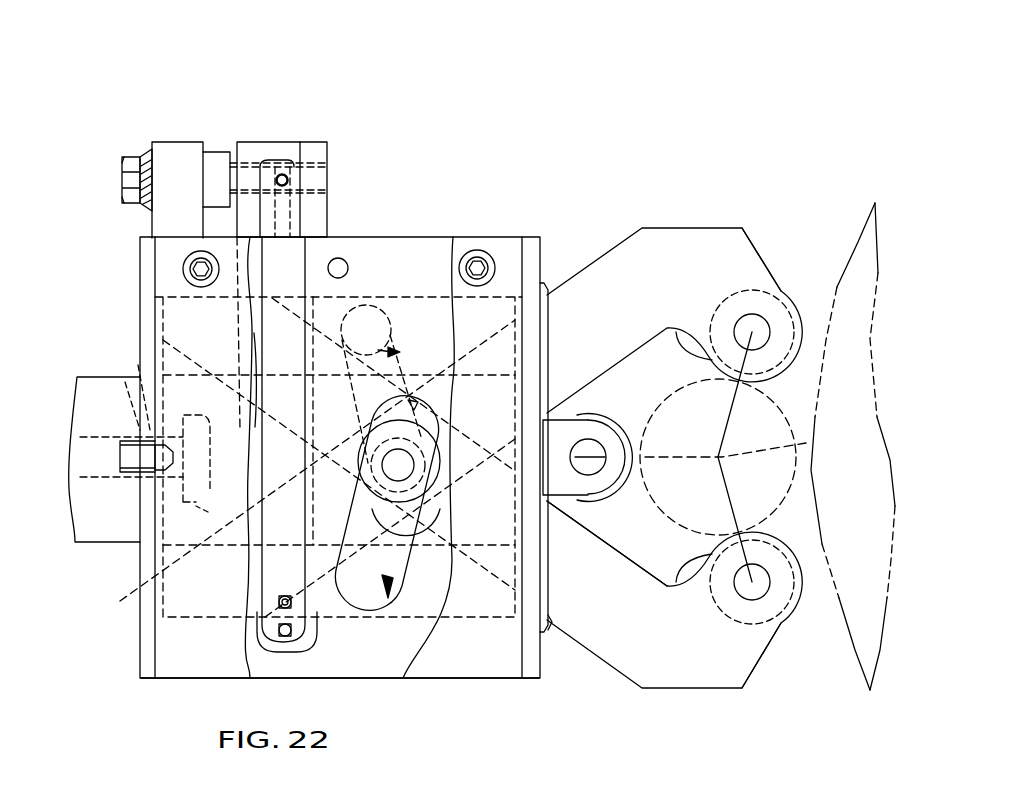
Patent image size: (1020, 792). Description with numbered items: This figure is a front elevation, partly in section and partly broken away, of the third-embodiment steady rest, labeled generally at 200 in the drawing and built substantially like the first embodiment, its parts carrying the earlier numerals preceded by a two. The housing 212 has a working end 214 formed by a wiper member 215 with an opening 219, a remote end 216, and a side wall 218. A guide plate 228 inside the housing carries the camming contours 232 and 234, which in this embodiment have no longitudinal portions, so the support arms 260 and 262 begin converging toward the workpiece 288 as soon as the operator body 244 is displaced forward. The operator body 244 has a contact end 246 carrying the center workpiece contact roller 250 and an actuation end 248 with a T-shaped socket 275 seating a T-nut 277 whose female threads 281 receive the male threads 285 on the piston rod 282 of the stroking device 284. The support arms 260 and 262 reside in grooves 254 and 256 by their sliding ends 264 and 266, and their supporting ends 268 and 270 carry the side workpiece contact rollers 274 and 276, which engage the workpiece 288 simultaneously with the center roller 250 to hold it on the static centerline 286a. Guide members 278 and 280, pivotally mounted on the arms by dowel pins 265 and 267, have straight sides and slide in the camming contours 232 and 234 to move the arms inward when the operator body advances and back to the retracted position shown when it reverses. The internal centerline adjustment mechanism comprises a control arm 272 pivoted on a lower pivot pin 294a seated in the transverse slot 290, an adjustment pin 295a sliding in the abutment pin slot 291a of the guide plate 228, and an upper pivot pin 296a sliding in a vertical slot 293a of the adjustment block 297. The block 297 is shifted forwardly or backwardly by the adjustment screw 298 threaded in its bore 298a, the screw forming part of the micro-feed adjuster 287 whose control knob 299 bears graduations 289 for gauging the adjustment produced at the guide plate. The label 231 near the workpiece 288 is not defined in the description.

The clamp block 200 is at (119, 302).
The housing 212 is at (418, 238).
The working end 214 is at (539, 253).
The wiper member 215 is at (543, 661).
The remote end 216 is at (140, 613).
The first side wall 218 is at (460, 658).
The opening 219 is at (552, 603).
The first guide plate 228 is at (416, 594).
The blade 231 is at (848, 228).
The camming contour 232 is at (392, 572).
The camming contour 234 is at (378, 308).
The operator body 244 is at (403, 530).
The contact end 246 is at (550, 545).
The actuation end 248 is at (300, 466).
The center workpiece contact roller 250 is at (590, 452).
The groove 254 is at (360, 608).
The groove 256 is at (352, 297).
The first support arm 260 is at (662, 229).
The second support arm 262 is at (693, 690).
The sliding end 264 is at (339, 457).
The dowel pin 265 is at (405, 462).
The sliding end 266 is at (250, 340).
The dowel pin 267 is at (430, 425).
The supporting end 268 is at (724, 262).
The supporting end 270 is at (733, 657).
The control arm 272 is at (300, 213).
The side workpiece contact roller 274 is at (676, 332).
The T-shaped socket 275 is at (225, 512).
The side workpiece contact roller 276 is at (669, 585).
The T-nut 277 is at (190, 468).
The guide member 278 is at (422, 533).
The guide member 280 is at (420, 400).
The female threads 281 is at (122, 386).
The piston rod 282 is at (140, 430).
The stroking device 284 is at (107, 520).
The male threads 285 is at (113, 406).
The static centerline 286a is at (753, 457).
The micro-feed adjuster apparatus 287 is at (120, 176).
The workpiece 288 is at (800, 502).
The graduations 289 is at (142, 148).
The transverse slot 290 is at (240, 411).
The abutment pin slot 291a is at (278, 603).
The vertical slot 293a is at (289, 150).
The lower pivot pin 294a is at (288, 637).
The adjustment pin 295a is at (281, 595).
The upper pivot pin 296a is at (302, 167).
The adjustment block 297 is at (256, 140).
The adjustment screw 298 is at (233, 180).
The threaded bore 298a is at (320, 176).
The control knob 299 is at (128, 158).